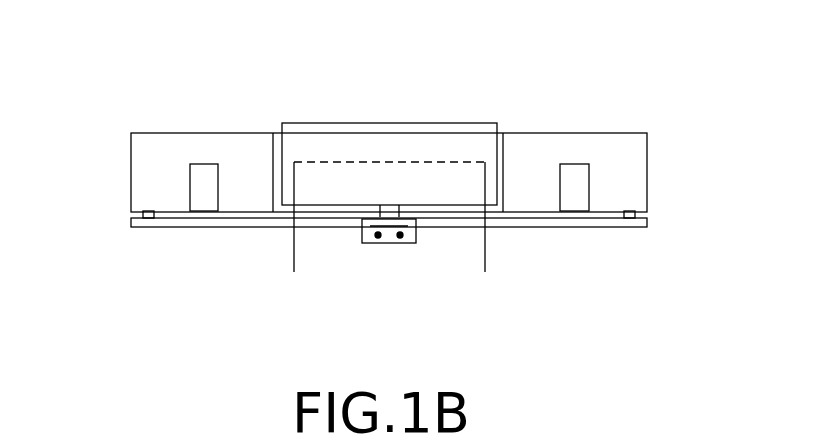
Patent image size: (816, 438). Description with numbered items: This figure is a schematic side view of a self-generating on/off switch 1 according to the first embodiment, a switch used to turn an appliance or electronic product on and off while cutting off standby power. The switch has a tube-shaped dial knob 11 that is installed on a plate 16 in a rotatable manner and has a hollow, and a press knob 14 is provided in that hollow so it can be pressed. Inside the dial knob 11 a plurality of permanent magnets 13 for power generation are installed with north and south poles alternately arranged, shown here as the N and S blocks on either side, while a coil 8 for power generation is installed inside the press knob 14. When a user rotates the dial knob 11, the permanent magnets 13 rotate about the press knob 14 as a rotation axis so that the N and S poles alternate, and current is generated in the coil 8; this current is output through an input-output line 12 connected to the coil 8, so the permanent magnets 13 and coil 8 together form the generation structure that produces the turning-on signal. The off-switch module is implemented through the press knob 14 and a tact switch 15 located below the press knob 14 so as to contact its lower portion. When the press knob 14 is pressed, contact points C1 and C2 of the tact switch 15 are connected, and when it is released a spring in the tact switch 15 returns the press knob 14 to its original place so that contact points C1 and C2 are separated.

The self-generating on/off switch 1 is at (615, 88).
The coil 8 is at (358, 178).
The dial knob 11 is at (154, 148).
The input-output line 12 is at (293, 242).
The permanent magnets 13 is at (204, 164).
The press knob 14 is at (457, 123).
The tact switch 15 is at (366, 236).
The plate 16 is at (175, 228).
The contact point C1 is at (378, 238).
The contact point C2 is at (400, 238).